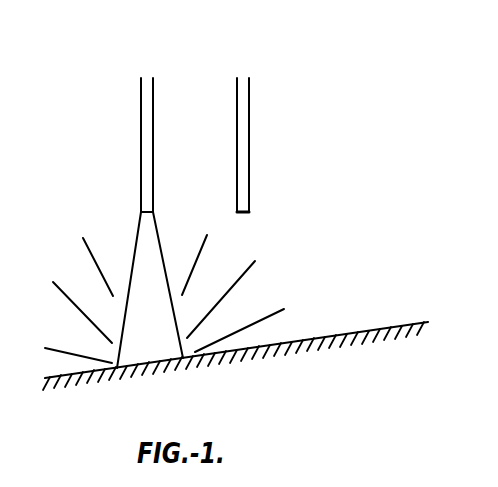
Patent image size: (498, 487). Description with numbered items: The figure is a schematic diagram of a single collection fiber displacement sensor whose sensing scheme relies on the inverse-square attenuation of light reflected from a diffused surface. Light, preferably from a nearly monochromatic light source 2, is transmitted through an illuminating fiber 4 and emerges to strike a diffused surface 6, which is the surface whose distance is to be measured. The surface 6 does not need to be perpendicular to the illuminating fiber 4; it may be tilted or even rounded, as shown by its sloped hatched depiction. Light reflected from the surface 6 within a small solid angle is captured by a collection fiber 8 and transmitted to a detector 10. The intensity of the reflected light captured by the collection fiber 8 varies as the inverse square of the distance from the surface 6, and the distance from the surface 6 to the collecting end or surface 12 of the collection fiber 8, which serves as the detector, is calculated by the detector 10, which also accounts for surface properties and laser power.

The light source 2 is at (108, 46).
The illuminating fiber 4 is at (137, 223).
The diffused surface 6 is at (235, 356).
The collection fiber 8 is at (270, 145).
The detector 10 is at (286, 44).
The collecting end of collection fiber 12 is at (245, 193).